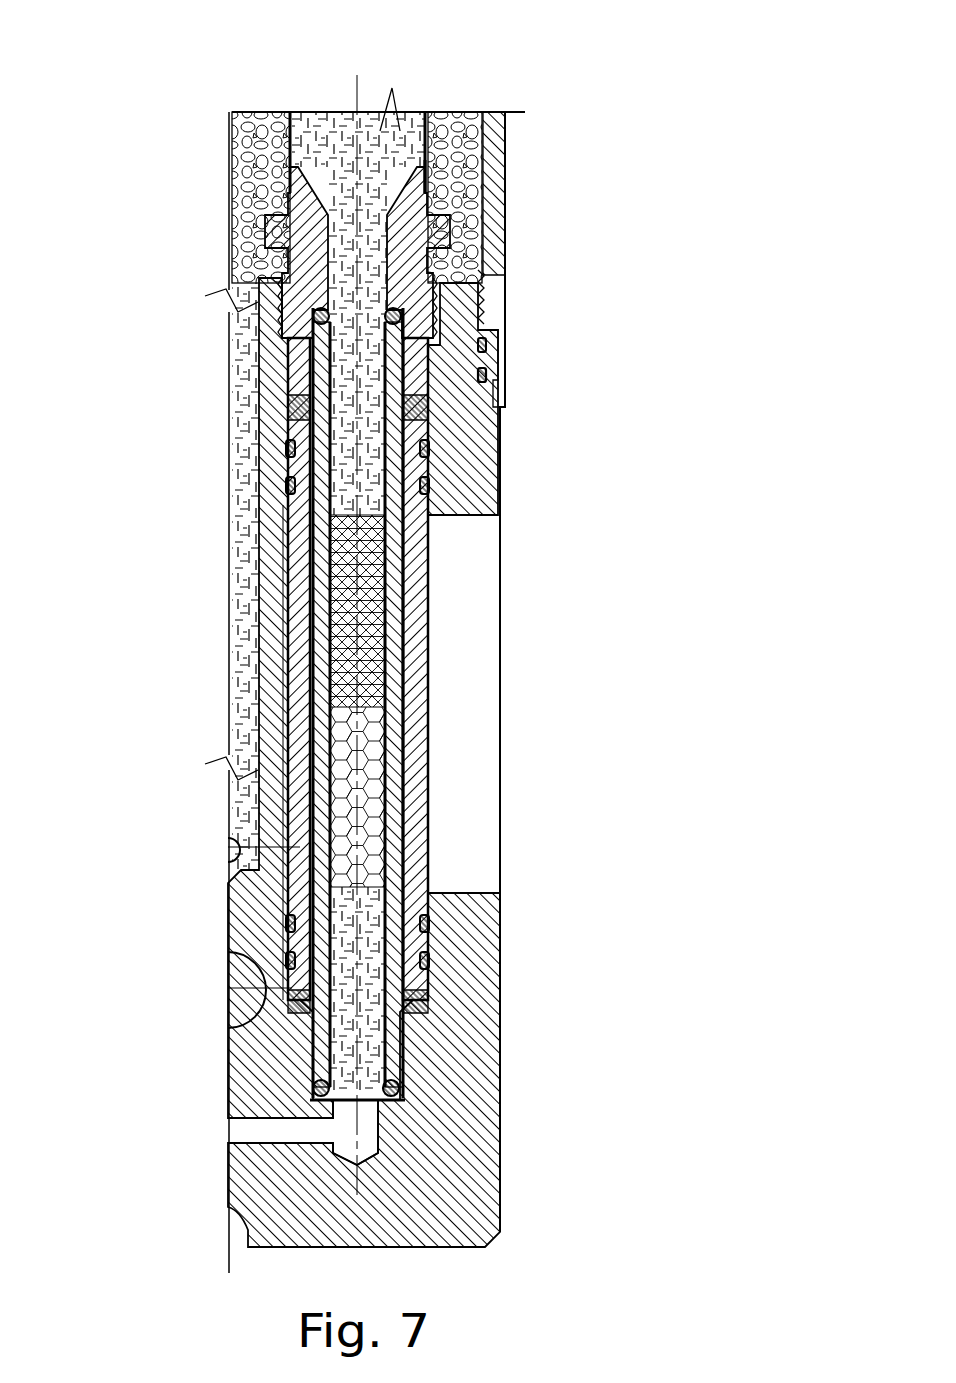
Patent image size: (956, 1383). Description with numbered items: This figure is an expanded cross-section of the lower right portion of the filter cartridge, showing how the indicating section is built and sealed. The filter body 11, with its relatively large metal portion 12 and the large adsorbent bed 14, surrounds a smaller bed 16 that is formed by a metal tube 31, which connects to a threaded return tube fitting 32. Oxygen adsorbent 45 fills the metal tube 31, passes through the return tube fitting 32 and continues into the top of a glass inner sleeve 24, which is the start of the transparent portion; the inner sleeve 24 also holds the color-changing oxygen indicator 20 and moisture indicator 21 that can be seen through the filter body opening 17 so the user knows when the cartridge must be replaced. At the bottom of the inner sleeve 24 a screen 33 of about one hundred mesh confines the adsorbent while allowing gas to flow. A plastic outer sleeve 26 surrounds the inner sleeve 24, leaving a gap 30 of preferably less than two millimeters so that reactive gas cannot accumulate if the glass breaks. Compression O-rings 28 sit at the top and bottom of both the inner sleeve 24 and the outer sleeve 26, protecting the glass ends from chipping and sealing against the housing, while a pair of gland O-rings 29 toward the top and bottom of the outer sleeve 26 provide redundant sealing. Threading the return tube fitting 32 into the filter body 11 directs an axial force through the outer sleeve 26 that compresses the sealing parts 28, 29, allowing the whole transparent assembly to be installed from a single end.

The filter body 11 is at (505, 160).
The relatively large metal portion 12 is at (475, 445).
The large adsorbent bed 14 is at (255, 170).
The smaller bed 16 is at (324, 132).
The filter body opening 17 is at (475, 727).
The oxygen indicator 20 is at (365, 657).
The moisture indicator 21 is at (363, 783).
The glass inner sleeve 24 is at (392, 565).
The plastic outer sleeve 26 is at (417, 617).
The compression O-ring 28 is at (445, 262).
The gland O-ring 29 is at (486, 340).
The gap 30 is at (403, 840).
The metal tube 31 is at (427, 130).
The threaded return tube fitting 32 is at (435, 230).
The screen 33 is at (400, 1112).
The oxygen adsorbent 45 is at (372, 355).